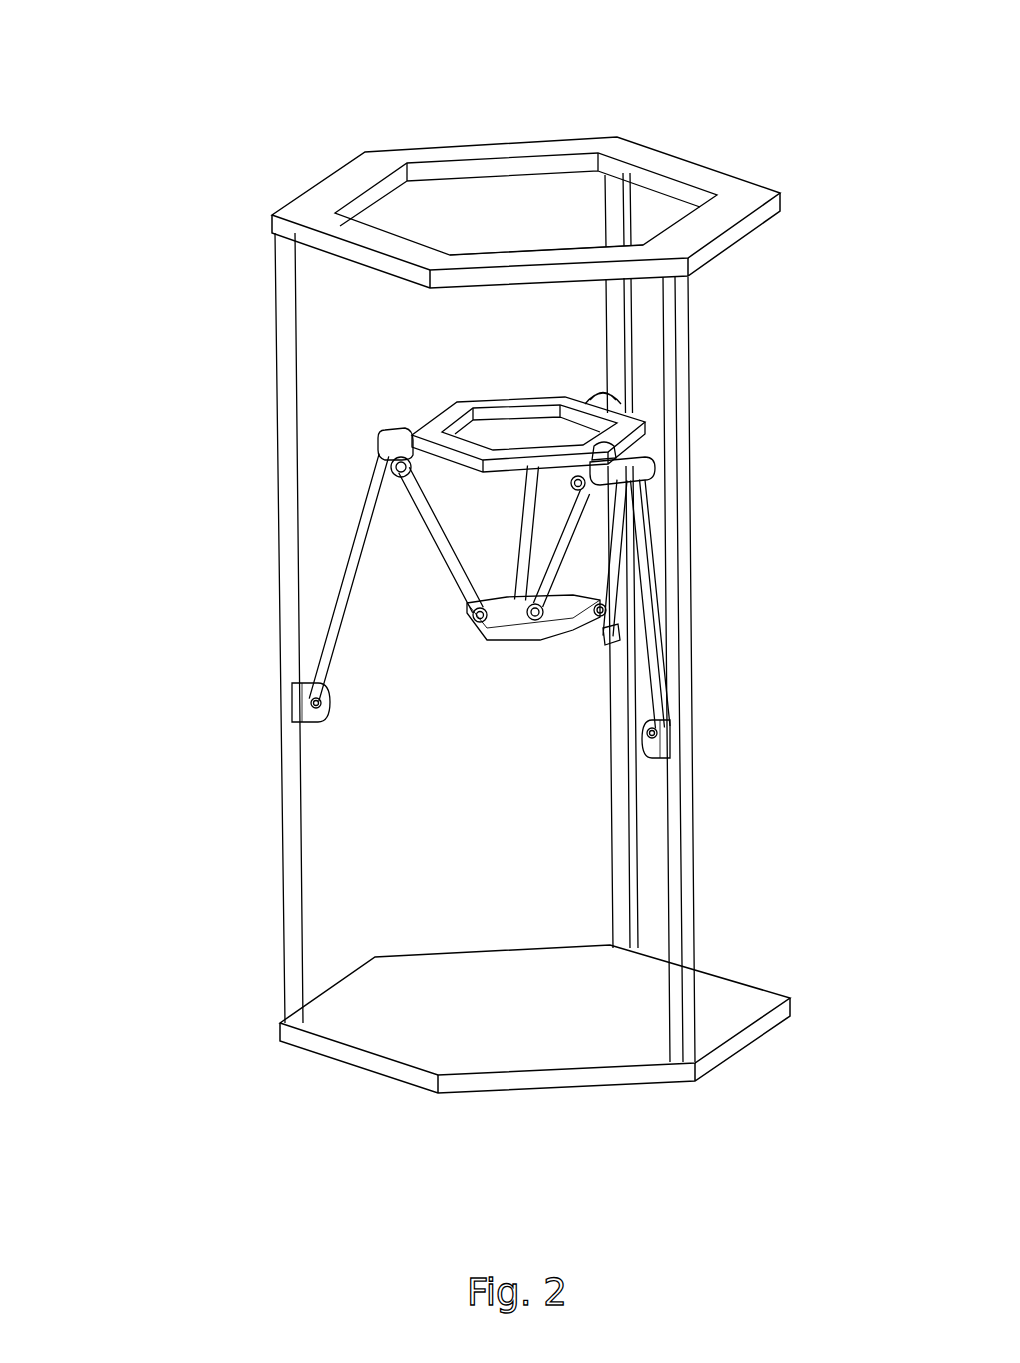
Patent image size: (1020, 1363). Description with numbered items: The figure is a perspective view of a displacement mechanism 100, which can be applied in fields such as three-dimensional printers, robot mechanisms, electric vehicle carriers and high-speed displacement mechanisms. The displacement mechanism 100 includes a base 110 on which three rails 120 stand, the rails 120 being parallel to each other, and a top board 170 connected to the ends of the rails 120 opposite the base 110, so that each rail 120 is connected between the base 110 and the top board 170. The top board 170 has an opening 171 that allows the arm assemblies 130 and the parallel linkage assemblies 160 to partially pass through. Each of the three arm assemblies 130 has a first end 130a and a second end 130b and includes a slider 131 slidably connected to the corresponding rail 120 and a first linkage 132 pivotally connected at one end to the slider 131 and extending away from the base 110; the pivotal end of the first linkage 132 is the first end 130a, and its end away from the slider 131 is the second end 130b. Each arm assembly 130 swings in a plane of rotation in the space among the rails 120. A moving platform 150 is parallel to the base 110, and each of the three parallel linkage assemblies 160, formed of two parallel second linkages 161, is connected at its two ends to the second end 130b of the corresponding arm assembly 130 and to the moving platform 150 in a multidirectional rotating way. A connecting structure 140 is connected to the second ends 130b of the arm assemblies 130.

The displacement mechanism 100 is at (248, 26).
The base 110 is at (342, 1060).
The rails 120 is at (282, 818).
The arm assemblies 130 is at (152, 595).
The first end 130a is at (322, 731).
The second end 130b is at (383, 426).
The slider 131 is at (300, 702).
The first linkage 132 is at (360, 598).
The connecting structure 140 is at (517, 400).
The moving platform 150 is at (563, 637).
The parallel linkage assemblies 160 is at (452, 596).
The second linkages 161 is at (428, 518).
The top board 170 is at (343, 170).
The opening 171 is at (488, 213).